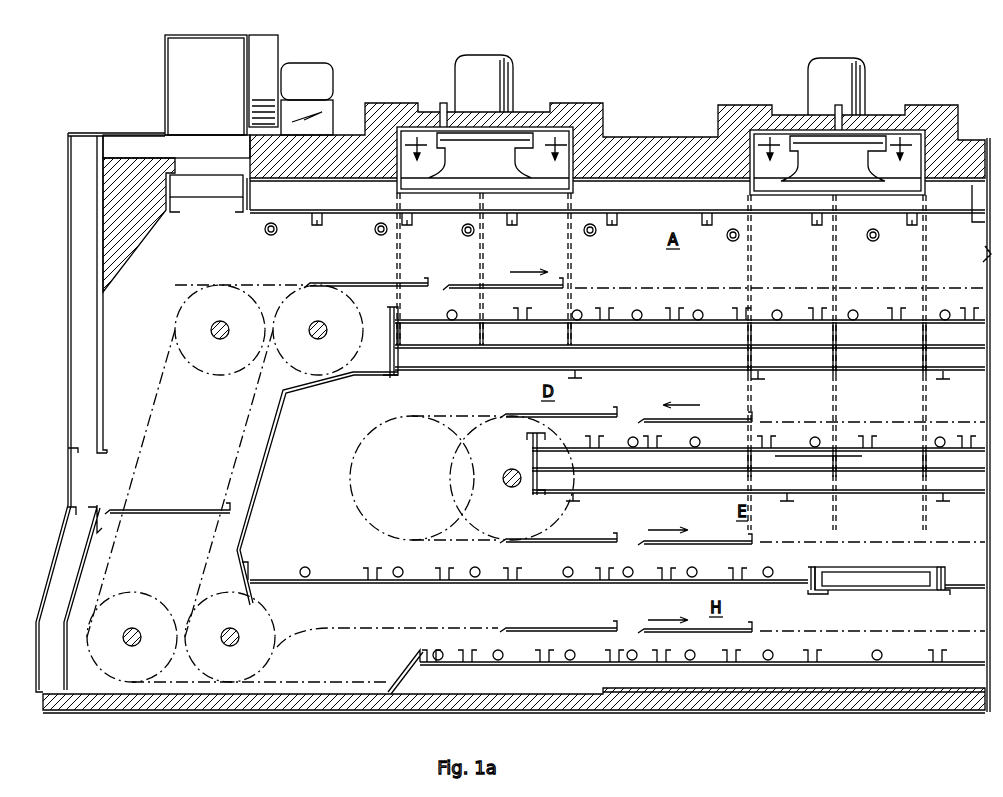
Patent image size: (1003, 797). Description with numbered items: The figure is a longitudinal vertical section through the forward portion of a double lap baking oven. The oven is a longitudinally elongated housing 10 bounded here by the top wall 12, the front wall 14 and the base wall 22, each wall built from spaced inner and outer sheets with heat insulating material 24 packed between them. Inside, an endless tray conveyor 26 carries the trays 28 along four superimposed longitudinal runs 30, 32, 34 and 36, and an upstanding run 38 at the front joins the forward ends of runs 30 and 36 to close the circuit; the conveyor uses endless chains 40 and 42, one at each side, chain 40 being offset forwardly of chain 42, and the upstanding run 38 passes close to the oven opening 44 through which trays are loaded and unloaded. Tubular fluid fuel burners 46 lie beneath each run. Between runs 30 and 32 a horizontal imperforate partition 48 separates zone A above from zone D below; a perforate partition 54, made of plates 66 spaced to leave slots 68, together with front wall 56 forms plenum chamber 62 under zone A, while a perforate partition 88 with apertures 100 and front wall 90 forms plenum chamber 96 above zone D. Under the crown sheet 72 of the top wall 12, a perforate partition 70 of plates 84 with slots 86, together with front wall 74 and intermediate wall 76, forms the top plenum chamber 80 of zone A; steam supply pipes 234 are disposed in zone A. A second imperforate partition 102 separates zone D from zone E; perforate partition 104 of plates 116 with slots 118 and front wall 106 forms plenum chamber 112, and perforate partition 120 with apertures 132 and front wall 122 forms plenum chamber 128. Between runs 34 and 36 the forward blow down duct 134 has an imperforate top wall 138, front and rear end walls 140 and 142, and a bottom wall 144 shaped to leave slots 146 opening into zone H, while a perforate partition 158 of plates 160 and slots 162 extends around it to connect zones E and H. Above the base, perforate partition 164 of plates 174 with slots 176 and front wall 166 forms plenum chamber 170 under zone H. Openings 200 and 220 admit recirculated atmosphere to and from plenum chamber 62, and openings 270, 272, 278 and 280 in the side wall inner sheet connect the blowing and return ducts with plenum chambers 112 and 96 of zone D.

The housing 10 is at (664, 75).
The top wall 12 is at (627, 137).
The front wall 14 is at (67, 283).
The base wall 22 is at (730, 713).
The heat insulating material 24 is at (340, 130).
The endless tray conveyor 26 is at (690, 288).
The trays 28 is at (344, 283).
The tray conveyor run 30 is at (643, 285).
The tray conveyor run 32 is at (626, 410).
The tray conveyor run 34 is at (623, 538).
The tray conveyor run 36 is at (627, 627).
The upstanding run 38 is at (167, 474).
The endless chain 40 is at (148, 431).
The endless chain 42 is at (242, 430).
The oven opening 44 is at (79, 482).
The tubular fluid fuel burners 46 is at (454, 310).
The horizontal imperforate partition 48 is at (678, 352).
The horizontal perforate partition 54 is at (783, 317).
The front wall 56 is at (393, 335).
The plenum chamber 62 is at (619, 342).
The plates 66 is at (588, 312).
The vents or slots 68 is at (602, 310).
The horizontal perforate partition 70 is at (363, 214).
The crown sheet 72 is at (290, 176).
The front wall 74 is at (250, 188).
The intermediate wall 76 is at (972, 225).
The plenum chamber 80 is at (637, 207).
The plates 84 is at (348, 215).
The vents or slots 86 is at (313, 225).
The horizontal perforate partition 88 is at (489, 372).
The front wall 90 is at (390, 357).
The plenum chamber 96 is at (619, 365).
The apertures 100 is at (702, 372).
The horizontal imperforate partition 102 is at (689, 474).
The horizontal perforate partition 104 is at (718, 445).
The front wall 106 is at (528, 453).
The plenum chamber 112 is at (661, 469).
The plates 116 is at (785, 452).
The vents or slots 118 is at (770, 438).
The horizontal perforate partition 120 is at (768, 497).
The front wall 122 is at (532, 478).
The plenum chamber 128 is at (734, 489).
The apertures 132 is at (728, 497).
The forward blow down duct 134 is at (865, 582).
The top wall 138 is at (870, 565).
The front end wall 140 is at (813, 568).
The rear end wall 142 is at (937, 567).
The bottom wall 144 is at (897, 593).
The vents or slots 146 is at (820, 597).
The horizontal perforate partition 158 is at (323, 575).
The plates 160 is at (448, 583).
The vents or slots 162 is at (517, 582).
The horizontal perforate partition 164 is at (600, 665).
The front wall 166 is at (417, 671).
The plenum chamber 170 is at (739, 689).
The plates 174 is at (523, 664).
The vents or slots 176 is at (660, 668).
The opening 200 is at (418, 330).
The opening 220 is at (504, 330).
The steam supply pipes 234 is at (462, 233).
The opening 270 is at (800, 463).
The opening 272 is at (820, 360).
The opening 278 is at (892, 460).
The opening 280 is at (908, 360).